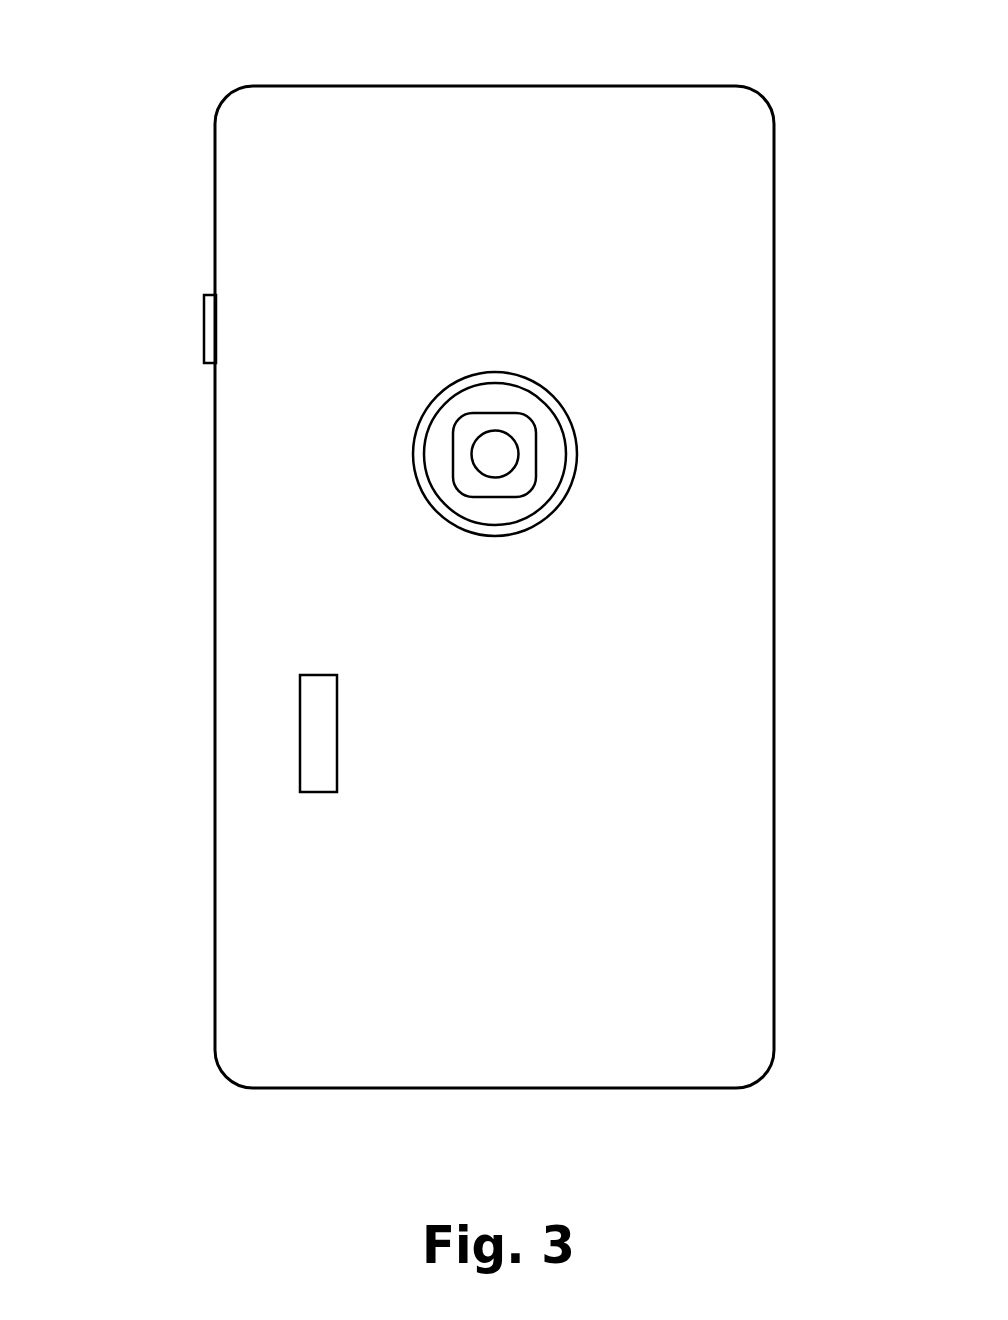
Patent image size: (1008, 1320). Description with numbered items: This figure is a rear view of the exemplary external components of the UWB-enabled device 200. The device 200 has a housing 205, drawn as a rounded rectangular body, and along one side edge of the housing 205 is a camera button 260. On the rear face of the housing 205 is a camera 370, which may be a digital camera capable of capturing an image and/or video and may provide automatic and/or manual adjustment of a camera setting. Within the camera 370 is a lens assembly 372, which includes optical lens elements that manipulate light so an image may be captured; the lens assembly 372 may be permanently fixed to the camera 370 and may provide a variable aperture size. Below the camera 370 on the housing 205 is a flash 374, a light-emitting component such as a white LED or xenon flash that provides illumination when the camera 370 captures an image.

The device 200 is at (217, 42).
The housing 205 is at (750, 707).
The camera button 260 is at (204, 333).
The camera 370 is at (547, 483).
The lens assembly 372 is at (518, 453).
The flash 374 is at (300, 735).